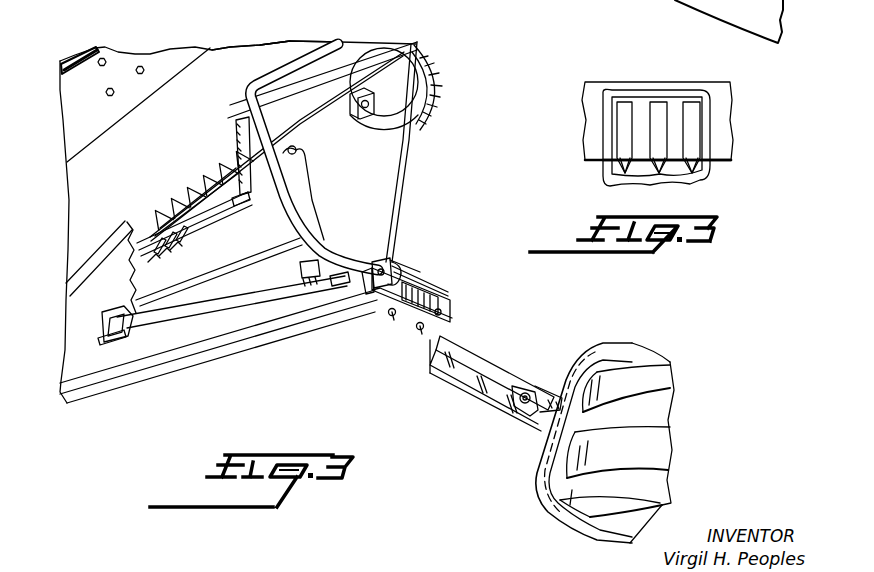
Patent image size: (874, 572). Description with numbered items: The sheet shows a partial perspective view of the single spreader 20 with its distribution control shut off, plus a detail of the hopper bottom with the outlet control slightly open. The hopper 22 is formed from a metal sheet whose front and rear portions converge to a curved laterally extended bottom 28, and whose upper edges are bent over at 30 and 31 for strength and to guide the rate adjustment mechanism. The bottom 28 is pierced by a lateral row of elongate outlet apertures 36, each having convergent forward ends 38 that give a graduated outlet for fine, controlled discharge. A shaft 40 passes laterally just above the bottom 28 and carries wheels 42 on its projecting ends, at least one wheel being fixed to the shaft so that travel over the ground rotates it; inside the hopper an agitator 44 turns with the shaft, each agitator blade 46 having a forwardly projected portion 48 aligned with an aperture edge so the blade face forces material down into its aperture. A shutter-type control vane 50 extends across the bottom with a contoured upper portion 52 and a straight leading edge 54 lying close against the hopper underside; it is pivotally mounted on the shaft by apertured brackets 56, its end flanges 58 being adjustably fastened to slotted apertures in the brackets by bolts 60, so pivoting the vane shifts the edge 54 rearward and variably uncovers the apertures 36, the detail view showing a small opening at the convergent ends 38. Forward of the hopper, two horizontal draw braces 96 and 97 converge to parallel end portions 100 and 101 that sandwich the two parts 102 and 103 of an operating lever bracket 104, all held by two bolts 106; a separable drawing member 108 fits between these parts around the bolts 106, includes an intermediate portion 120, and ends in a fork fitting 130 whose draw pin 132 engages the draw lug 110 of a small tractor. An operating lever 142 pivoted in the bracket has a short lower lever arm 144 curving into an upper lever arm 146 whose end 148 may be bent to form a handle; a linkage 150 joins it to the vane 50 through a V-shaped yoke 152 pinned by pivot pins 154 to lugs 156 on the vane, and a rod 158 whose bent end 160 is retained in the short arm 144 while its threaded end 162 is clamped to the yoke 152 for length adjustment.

In FIG. 2, the single spreader 20 is at (119, 32).
In FIG. 2, the hopper 22 is at (228, 50).
In FIG. 2, the curved laterally extended bottom 28 is at (243, 212).
In FIG. 3, the curved laterally extended bottom 28 is at (708, 158).
In FIG. 2, the bent-over upper edge 30 is at (300, 88).
In FIG. 2, the bent-over upper edge 31 is at (78, 56).
In FIG. 2, the outlet apertures 36 is at (180, 250).
In FIG. 3, the outlet apertures 36 is at (690, 104).
In FIG. 2, the convergent forward ends 38 is at (198, 232).
In FIG. 3, the convergent forward ends 38 is at (694, 176).
In FIG. 2, the shaft 40 is at (178, 224).
In FIG. 2, the wheels 42 is at (432, 101).
In FIG. 2, the agitator 44 is at (222, 170).
In FIG. 2, the agitator blade 46 is at (222, 226).
In FIG. 2, the forwardly projected portion 48 is at (198, 190).
In FIG. 2, the shutter-type control vane 50 is at (160, 286).
In FIG. 3, the shutter-type control vane 50 is at (598, 84).
In FIG. 2, the contoured upper portion 52 is at (132, 238).
In FIG. 3, the contoured upper portion 52 is at (588, 125).
In FIG. 2, the straight leading edge 54 is at (180, 278).
In FIG. 3, the straight leading edge 54 is at (604, 162).
In FIG. 2, the brackets 56 is at (366, 74).
In FIG. 2, the end flanges 58 is at (364, 122).
In FIG. 2, the bolts 60 is at (369, 105).
In FIG. 2, the draw brace 96 is at (241, 338).
In FIG. 2, the draw brace 97 is at (407, 176).
In FIG. 2, the brace end portion 100 is at (380, 300).
In FIG. 2, the brace end portion 101 is at (418, 279).
In FIG. 2, the operating lever bracket part 102 is at (358, 302).
In FIG. 2, the operating lever bracket part 103 is at (410, 268).
In FIG. 2, the operating lever bracket 104 is at (366, 247).
In FIG. 2, the bolts 106 is at (392, 322).
In FIG. 2, the drawing member 108 is at (468, 326).
In FIG. 2, the draw lug 110 is at (530, 424).
In FIG. 2, the second intermediate portion 120 is at (400, 278).
In FIG. 2, the fork fitting 130 is at (523, 355).
In FIG. 2, the draw pin 132 is at (529, 388).
In FIG. 2, the operating lever 142 is at (312, 238).
In FIG. 2, the short lower lever arm 144 is at (368, 258).
In FIG. 2, the upper lever arm 146 is at (270, 139).
In FIG. 2, the end of upper arm 148 is at (283, 46).
In FIG. 2, the linkage 150 is at (313, 329).
In FIG. 2, the V-shaped yoke 152 is at (250, 296).
In FIG. 2, the pivot pins 154 is at (112, 337).
In FIG. 2, the lugs 156 is at (300, 154).
In FIG. 2, the rod 158 is at (344, 284).
In FIG. 2, the rod end 160 is at (396, 262).
In FIG. 2, the threaded end 162 is at (301, 266).